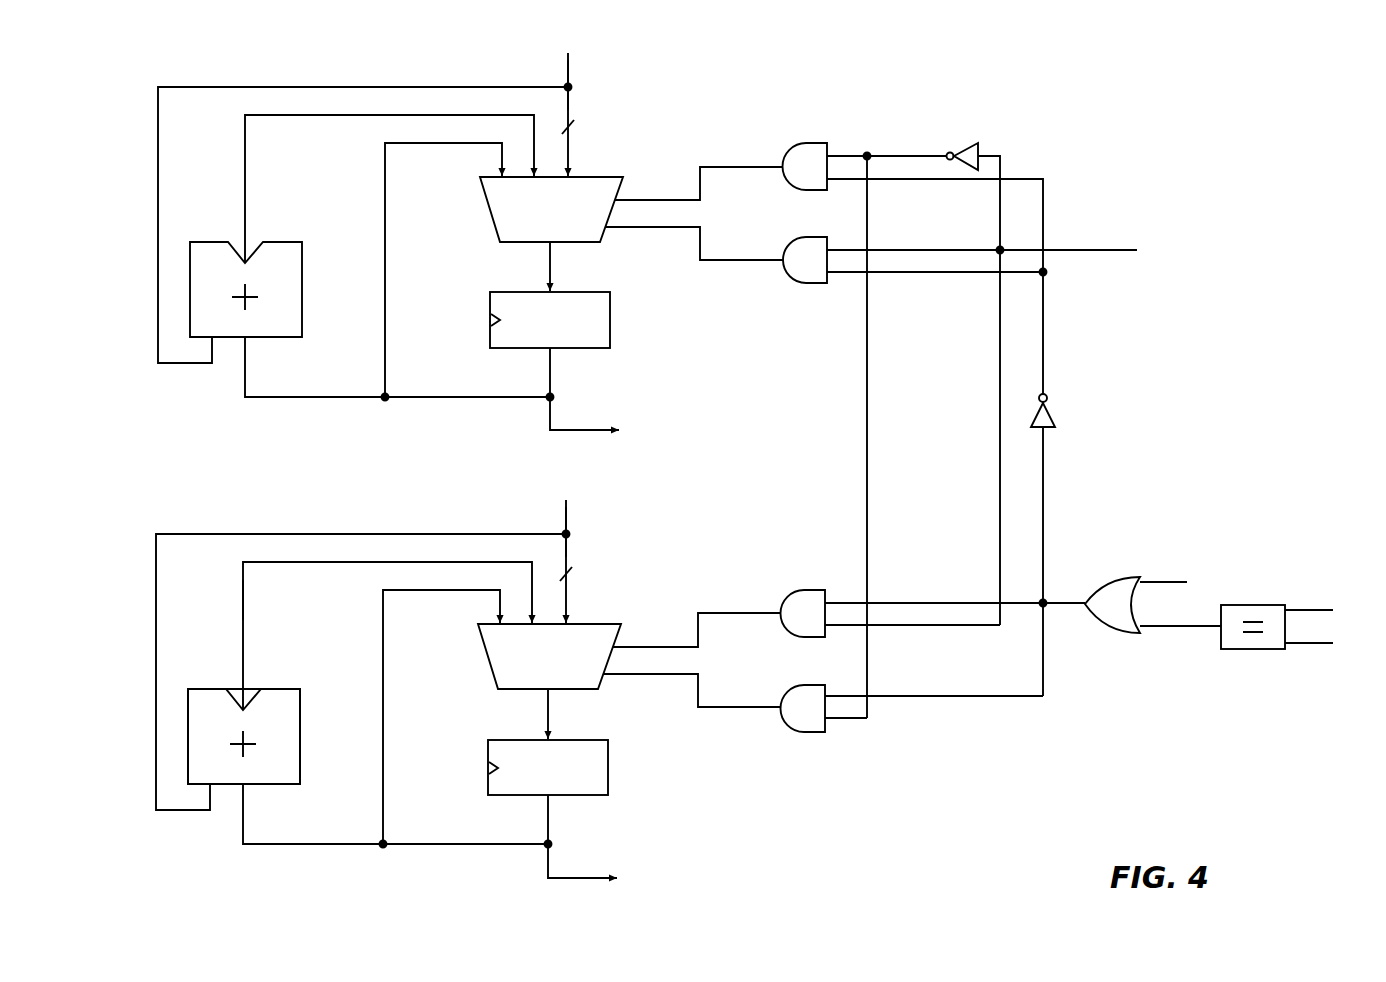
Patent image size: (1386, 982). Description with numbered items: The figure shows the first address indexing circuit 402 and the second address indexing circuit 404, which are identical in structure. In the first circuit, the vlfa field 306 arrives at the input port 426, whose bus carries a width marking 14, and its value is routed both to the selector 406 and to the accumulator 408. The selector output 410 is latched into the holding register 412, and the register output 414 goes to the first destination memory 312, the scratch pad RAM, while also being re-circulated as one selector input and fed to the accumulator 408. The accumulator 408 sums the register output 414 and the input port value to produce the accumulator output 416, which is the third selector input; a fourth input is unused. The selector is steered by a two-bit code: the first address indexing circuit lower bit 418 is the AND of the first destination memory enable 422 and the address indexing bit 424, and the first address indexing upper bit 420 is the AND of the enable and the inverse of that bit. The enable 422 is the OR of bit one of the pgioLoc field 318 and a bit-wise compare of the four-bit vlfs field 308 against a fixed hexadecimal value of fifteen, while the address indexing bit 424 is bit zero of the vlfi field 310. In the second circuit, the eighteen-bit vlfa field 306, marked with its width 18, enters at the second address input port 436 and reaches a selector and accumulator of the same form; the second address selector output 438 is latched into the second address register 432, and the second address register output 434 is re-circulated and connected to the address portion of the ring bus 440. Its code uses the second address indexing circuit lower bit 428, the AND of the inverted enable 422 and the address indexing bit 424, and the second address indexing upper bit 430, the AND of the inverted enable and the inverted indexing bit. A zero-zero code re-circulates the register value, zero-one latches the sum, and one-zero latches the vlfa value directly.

The vlfa field 306 is at (596, 40).
The second address input port 436 is at (570, 70).
The bus width indicator 18 is at (581, 126).
The second address indexing upper bit 430 is at (742, 165).
The second address indexing circuit lower bit 428 is at (742, 257).
The address indexing bit 424 is at (1087, 250).
The vlfi field 310 is at (1170, 230).
The second address selector output 438 is at (552, 260).
The second address register 432 is at (569, 333).
The second address register output 434 is at (552, 368).
The ring bus 440 is at (708, 415).
The second address indexing circuit 404 is at (218, 405).
The first address indexing circuit 402 is at (212, 853).
The input port 426 is at (568, 517).
The bus width indicator 14 is at (579, 573).
The accumulator output 416 is at (245, 600).
The accumulator 408 is at (292, 688).
The selector 406 is at (567, 680).
The first address indexing circuit lower bit 418 is at (740, 610).
The first address indexing upper bit 420 is at (740, 703).
The first destination memory enable 422 is at (1062, 600).
The pgioLoc field 318 is at (1255, 565).
The vlfs field 308 is at (1362, 592).
The selector output 410 is at (550, 708).
The holding register 412 is at (567, 780).
The register output 414 is at (550, 818).
The first destination memory 312 is at (706, 862).